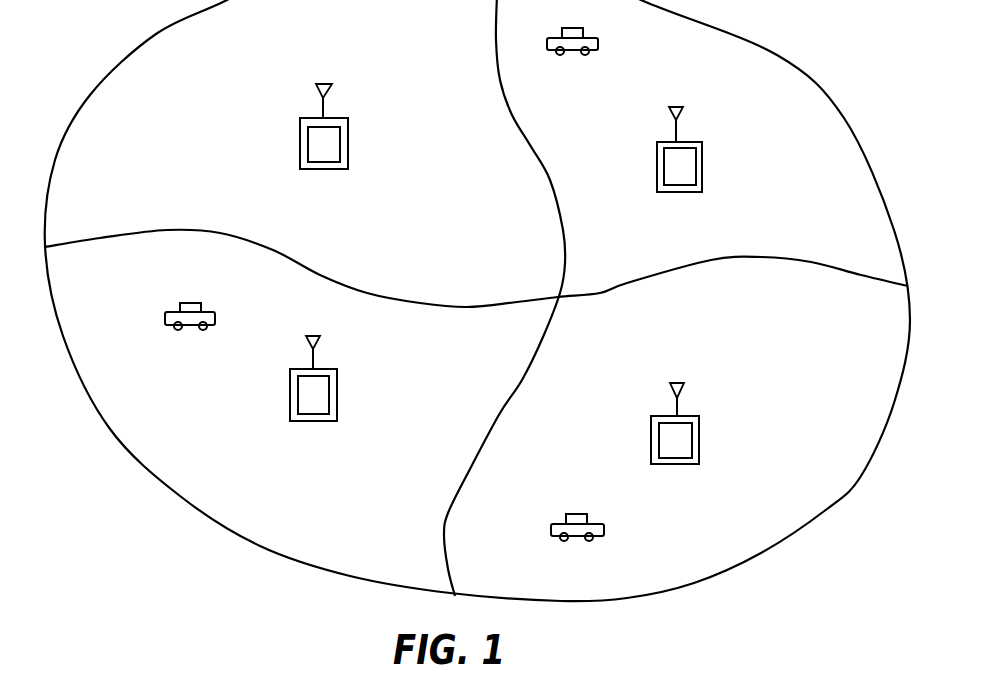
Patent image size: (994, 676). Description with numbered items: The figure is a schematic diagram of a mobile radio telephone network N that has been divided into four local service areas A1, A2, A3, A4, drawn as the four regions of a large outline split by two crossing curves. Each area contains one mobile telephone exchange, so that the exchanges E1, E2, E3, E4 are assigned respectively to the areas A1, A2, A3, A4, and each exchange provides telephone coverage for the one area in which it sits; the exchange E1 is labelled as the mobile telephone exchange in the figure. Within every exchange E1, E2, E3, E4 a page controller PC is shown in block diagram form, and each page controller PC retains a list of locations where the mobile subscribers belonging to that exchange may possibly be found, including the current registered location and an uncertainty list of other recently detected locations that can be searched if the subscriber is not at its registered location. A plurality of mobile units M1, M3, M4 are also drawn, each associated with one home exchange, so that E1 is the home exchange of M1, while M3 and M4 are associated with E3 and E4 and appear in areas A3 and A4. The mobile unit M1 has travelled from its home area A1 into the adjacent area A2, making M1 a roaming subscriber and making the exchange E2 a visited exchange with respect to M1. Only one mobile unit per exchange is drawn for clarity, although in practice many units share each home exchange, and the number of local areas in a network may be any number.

The mobile radio telephone network N is at (155, 33).
The local service area A1 is at (94, 93).
The local service area A2 is at (842, 120).
The local service area A3 is at (181, 496).
The local service area A4 is at (808, 520).
The mobile telephone exchange E1 is at (421, 147).
The mobile telephone exchange E2 is at (657, 170).
The mobile telephone exchange E3 is at (337, 405).
The mobile telephone exchange E4 is at (651, 446).
The page controller PC is at (320, 145).
The mobile unit M1 is at (572, 28).
The mobile unit M3 is at (190, 303).
The mobile unit M4 is at (577, 515).